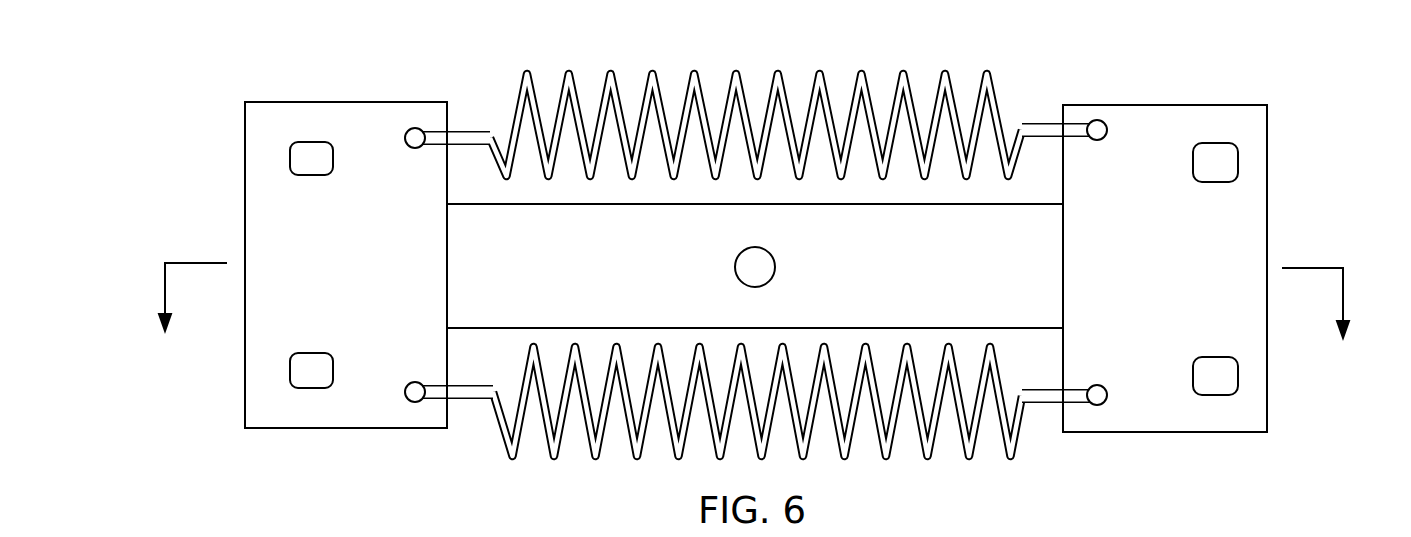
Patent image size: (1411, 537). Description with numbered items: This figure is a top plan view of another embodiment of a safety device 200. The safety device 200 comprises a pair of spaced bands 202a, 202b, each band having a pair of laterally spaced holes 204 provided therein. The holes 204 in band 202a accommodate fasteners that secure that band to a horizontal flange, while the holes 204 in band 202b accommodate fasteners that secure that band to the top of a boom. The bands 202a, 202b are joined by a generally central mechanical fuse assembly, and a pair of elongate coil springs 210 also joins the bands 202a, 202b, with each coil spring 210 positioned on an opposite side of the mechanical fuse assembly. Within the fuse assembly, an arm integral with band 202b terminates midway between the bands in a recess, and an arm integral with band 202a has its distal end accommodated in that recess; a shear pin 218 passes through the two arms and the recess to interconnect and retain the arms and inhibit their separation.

The safety device 200 is at (756, 276).
The band 202a is at (1268, 218).
The band 202b is at (245, 203).
The holes 204 is at (306, 368).
The coil springs 210 is at (516, 101).
The shear pin 218 is at (757, 270).